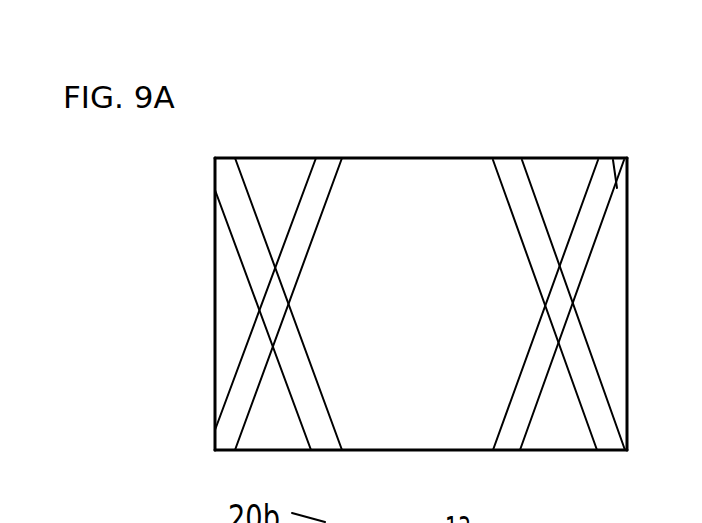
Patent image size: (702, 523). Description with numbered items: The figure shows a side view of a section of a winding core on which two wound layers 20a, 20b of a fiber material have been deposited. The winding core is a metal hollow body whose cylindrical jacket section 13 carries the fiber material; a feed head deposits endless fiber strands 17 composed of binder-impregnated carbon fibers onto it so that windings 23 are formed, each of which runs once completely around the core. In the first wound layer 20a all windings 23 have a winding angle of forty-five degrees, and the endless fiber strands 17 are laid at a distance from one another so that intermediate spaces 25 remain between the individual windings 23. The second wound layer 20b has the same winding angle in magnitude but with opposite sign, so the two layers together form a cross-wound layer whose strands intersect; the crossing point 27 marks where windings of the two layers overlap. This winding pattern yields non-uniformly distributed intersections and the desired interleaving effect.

The cylindrical jacket section 13 is at (503, 158).
The endless fiber strand 17 is at (245, 220).
The first wound layer 20a is at (242, 278).
The second wound layer 20b is at (270, 279).
The winding 23 is at (233, 377).
The intermediate space 25 is at (555, 432).
The crossing point 27 is at (275, 310).